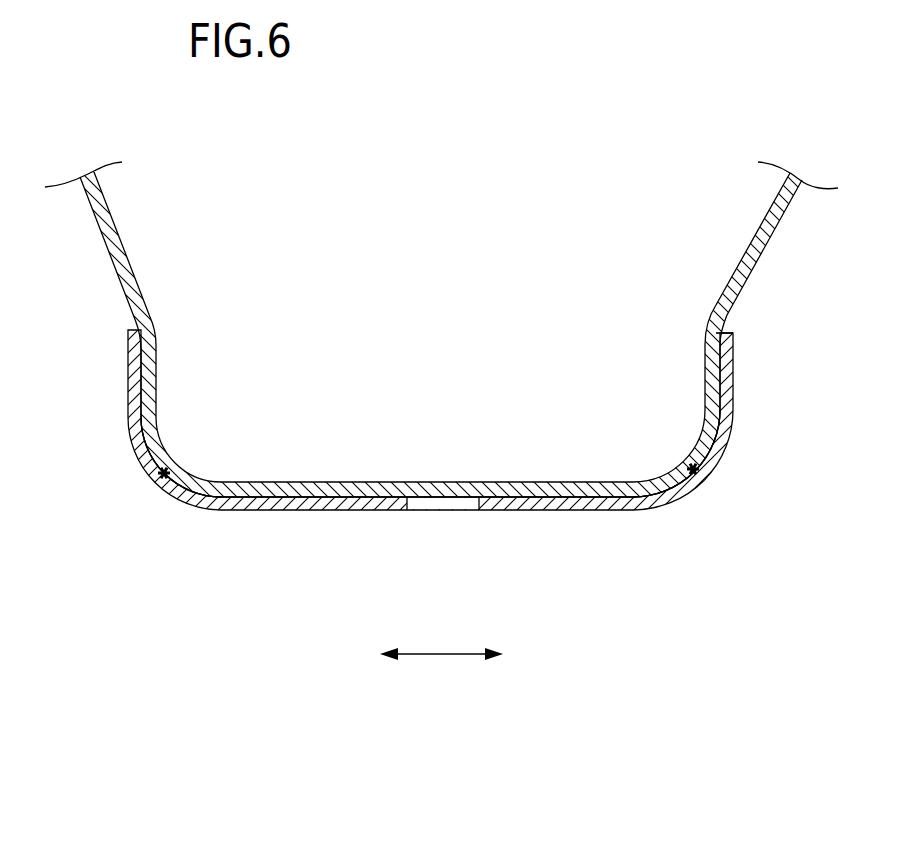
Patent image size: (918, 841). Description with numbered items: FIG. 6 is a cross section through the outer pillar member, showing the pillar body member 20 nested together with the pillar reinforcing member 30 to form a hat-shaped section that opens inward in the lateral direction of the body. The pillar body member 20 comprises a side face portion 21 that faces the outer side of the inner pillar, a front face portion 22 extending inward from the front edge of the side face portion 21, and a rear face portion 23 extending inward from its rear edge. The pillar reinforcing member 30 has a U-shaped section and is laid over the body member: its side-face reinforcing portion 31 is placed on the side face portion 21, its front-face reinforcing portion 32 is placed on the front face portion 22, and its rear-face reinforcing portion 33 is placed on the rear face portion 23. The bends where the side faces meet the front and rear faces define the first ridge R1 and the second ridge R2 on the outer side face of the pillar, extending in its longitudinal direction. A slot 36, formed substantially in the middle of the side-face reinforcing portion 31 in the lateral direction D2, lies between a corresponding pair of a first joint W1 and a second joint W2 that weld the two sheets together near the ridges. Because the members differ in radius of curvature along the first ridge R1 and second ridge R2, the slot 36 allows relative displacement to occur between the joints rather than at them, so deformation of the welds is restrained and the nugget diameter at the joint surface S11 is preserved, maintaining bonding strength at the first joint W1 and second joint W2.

The pillar body member 20 is at (441, 327).
The side face portion 21 is at (366, 482).
The front face portion 22 is at (705, 370).
The rear face portion 23 is at (157, 370).
The pillar reinforcing member 30 is at (430, 460).
The side-face reinforcing portion 31 is at (533, 512).
The front-face reinforcing portion 32 is at (733, 370).
The rear-face reinforcing portion 33 is at (128, 370).
The slot 36 is at (423, 508).
The joint surface S11 is at (723, 330).
The first joint W1 is at (712, 467).
The second joint W2 is at (137, 470).
The first ridge R1 is at (695, 487).
The second ridge R2 is at (163, 487).
The lateral direction D2 is at (443, 657).